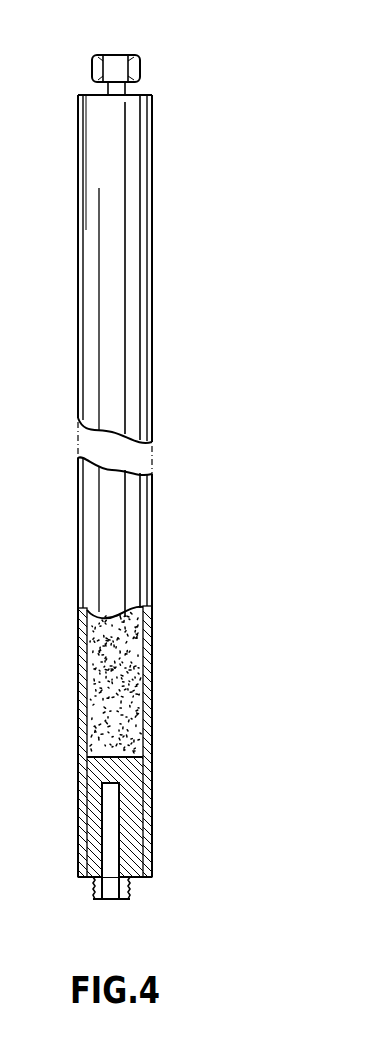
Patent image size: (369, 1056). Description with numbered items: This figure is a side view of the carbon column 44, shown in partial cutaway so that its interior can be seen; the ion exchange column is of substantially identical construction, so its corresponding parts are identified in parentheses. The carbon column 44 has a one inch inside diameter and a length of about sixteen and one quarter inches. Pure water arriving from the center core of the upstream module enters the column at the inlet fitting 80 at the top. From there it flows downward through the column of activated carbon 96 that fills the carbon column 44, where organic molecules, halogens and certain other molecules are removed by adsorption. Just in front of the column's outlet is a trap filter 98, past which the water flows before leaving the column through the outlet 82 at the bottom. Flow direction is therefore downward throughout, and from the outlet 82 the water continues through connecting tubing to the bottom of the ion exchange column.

The inlet fitting 80 is at (140, 68).
The carbon column 44 is at (143, 325).
The activated carbon 96 is at (134, 655).
The trap filter 98 is at (133, 773).
The outlet 82 is at (128, 893).